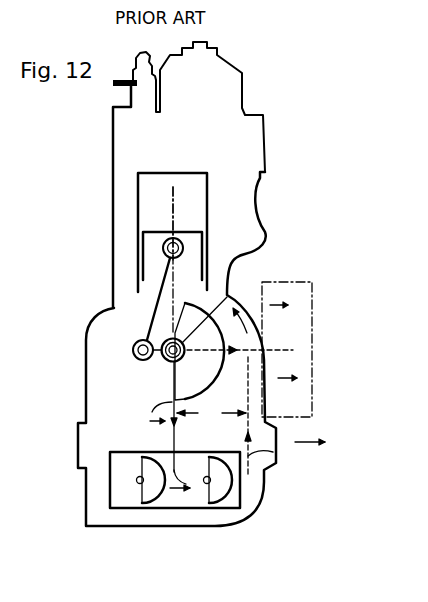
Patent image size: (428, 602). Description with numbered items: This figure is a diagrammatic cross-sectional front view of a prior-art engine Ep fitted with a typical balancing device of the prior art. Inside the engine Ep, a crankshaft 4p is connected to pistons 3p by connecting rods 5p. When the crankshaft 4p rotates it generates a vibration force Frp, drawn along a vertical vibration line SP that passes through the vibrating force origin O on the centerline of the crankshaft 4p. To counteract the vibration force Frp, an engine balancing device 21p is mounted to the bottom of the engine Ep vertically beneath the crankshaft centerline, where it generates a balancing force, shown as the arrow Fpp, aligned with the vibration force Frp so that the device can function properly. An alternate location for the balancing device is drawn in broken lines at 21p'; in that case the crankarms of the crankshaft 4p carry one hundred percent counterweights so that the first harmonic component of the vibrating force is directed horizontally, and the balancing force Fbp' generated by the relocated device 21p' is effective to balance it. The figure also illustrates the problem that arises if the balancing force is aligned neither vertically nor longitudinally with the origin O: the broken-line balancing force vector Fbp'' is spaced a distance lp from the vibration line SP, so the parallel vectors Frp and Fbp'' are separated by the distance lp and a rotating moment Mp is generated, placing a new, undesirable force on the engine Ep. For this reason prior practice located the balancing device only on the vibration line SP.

The engine Ep is at (274, 156).
The vertical vibration line SP is at (175, 208).
The piston 3p is at (192, 233).
The crankshaft 4p is at (160, 364).
The connecting rod 5p is at (157, 311).
The vibrating force origin O is at (232, 301).
The rotating moment Mp is at (253, 314).
The relocated balancing device 21p' is at (312, 349).
The balancing force Fbp' is at (287, 391).
The balancing force vector Fbp'' is at (291, 416).
The distance lp is at (211, 419).
The vibration force Frp is at (164, 423).
The balancer inertia force Fpp is at (184, 497).
The engine balancing device 21p is at (175, 510).